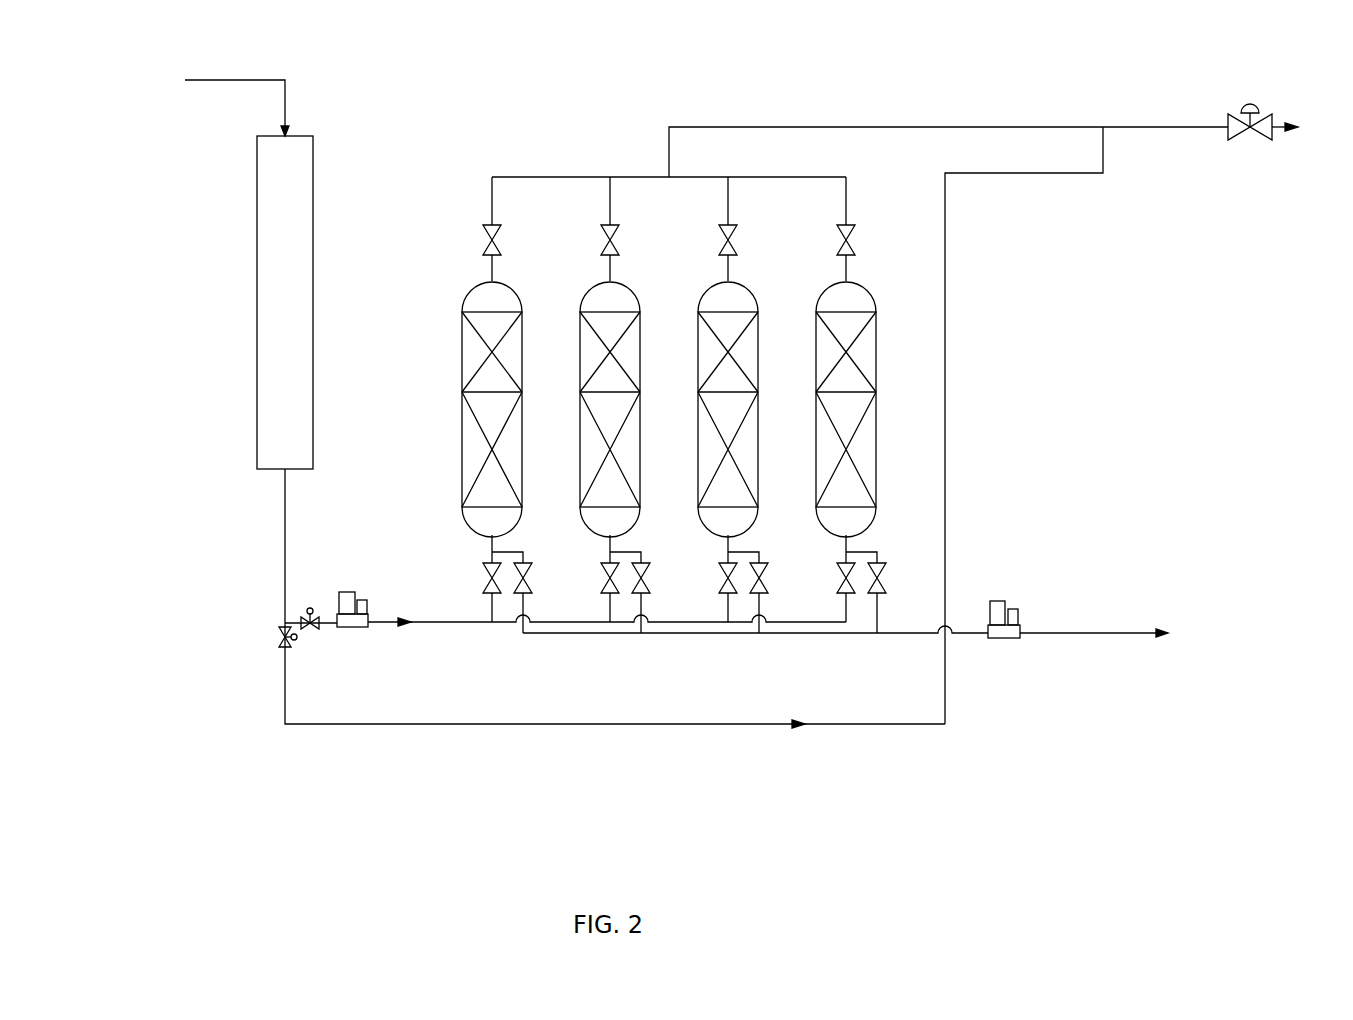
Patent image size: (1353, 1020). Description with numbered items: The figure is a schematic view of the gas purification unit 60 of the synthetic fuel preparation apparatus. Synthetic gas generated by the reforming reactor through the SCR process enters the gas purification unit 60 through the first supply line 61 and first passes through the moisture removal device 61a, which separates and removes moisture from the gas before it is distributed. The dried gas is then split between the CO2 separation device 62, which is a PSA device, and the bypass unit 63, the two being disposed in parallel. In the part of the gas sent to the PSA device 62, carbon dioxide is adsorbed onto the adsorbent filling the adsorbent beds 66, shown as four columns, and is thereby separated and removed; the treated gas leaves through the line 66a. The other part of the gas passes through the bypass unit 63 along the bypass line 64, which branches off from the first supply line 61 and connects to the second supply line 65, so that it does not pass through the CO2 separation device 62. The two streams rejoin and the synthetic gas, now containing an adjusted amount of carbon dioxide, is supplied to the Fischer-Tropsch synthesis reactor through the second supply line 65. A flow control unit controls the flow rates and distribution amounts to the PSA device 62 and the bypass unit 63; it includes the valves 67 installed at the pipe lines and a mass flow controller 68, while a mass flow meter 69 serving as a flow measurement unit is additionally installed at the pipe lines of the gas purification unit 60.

The gas purification unit 60 is at (598, 92).
The first supply line 61 is at (245, 80).
The moisture removal device 61a is at (315, 172).
The CO2 separation device 62 is at (491, 128).
The bypass unit 63 is at (652, 735).
The bypass line 64 is at (516, 725).
The second supply line 65 is at (1204, 126).
The adsorbent beds 66 is at (758, 350).
The exhaust line 66a is at (815, 636).
The valves 67 is at (488, 225).
The mass flow controller 68 is at (343, 592).
The mass flow meter 69 is at (1003, 601).